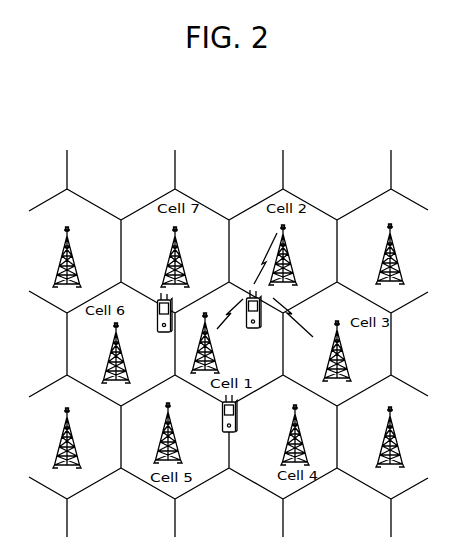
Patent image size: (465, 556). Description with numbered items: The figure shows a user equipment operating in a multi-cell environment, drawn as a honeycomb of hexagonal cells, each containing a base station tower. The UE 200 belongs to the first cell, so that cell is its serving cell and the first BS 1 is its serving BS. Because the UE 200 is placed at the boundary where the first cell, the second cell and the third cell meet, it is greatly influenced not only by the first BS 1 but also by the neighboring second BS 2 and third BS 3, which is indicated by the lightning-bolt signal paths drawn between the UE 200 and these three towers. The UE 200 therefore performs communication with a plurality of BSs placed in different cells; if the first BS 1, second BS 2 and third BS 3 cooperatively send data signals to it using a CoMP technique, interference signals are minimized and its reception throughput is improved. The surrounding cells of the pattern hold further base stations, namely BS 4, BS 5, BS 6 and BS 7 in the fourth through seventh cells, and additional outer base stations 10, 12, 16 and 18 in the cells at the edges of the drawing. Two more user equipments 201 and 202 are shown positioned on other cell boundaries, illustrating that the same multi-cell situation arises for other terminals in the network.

The first BS 1 is at (217, 367).
The second BS 2 is at (295, 258).
The third BS 3 is at (348, 353).
The base station of cell 4 is at (306, 434).
The base station of cell 5 is at (179, 433).
The base station of cell 6 is at (107, 354).
The base station of cell 7 is at (186, 259).
The base station 10 is at (401, 254).
The base station 12 is at (401, 439).
The base station 16 is at (77, 440).
The base station 18 is at (78, 260).
The UE 200 is at (255, 328).
The mobile station 201 is at (238, 413).
The mobile station 202 is at (160, 332).